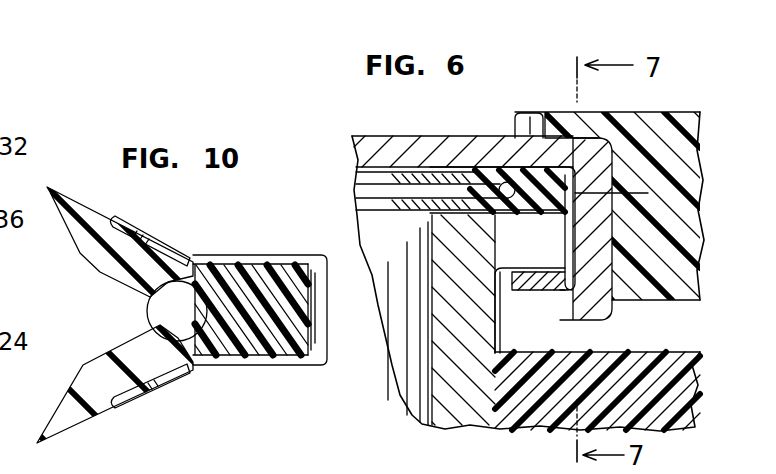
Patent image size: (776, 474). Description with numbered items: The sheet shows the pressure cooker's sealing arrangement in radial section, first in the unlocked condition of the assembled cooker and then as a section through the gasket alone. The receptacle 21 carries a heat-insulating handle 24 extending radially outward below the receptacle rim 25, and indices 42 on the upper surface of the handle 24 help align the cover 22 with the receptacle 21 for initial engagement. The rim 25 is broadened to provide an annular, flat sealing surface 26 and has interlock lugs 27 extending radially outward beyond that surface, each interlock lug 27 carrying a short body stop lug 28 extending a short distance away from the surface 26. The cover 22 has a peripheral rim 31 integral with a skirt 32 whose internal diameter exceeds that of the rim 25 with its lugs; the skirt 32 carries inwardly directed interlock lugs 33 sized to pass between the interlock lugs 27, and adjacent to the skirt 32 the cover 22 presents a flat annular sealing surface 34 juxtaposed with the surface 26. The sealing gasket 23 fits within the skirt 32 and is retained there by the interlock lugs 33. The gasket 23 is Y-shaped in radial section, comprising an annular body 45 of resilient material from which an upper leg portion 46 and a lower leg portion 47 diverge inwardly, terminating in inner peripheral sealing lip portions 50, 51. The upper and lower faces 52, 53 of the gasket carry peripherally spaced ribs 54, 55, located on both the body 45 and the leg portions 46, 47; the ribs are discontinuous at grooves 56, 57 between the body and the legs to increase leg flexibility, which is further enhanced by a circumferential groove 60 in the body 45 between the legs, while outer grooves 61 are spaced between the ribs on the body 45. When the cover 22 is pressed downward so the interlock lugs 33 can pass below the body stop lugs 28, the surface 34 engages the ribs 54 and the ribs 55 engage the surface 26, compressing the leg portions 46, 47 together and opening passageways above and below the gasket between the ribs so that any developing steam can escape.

In FIG. 6, the receptacle 21 is at (433, 423).
In FIG. 6, the cover 22 is at (380, 129).
In FIG. 10, the sealing gasket 23 is at (225, 245).
In FIG. 6, the sealing gasket 23 is at (358, 205).
In FIG. 6, the handles 24 is at (712, 355).
In FIG. 6, the receptacle rim 25 is at (473, 247).
In FIG. 6, the sealing surface 26 is at (395, 222).
In FIG. 6, the interlock lugs 27 is at (560, 292).
In FIG. 6, the body stop lugs 28 is at (530, 292).
In FIG. 6, the peripheral rim 31 is at (604, 136).
In FIG. 6, the skirt 32 is at (575, 187).
In FIG. 6, the interlock lugs 33 is at (578, 319).
In FIG. 6, the sealing surface 34 is at (521, 136).
In FIG. 6, the indices 42 is at (670, 346).
In FIG. 10, the annular body 45 is at (265, 345).
In FIG. 6, the annular body 45 is at (543, 185).
In FIG. 10, the upper leg portion 46 is at (100, 272).
In FIG. 6, the upper leg portion 46 is at (458, 180).
In FIG. 10, the lower leg portion 47 is at (100, 362).
In FIG. 6, the lower leg portion 47 is at (463, 212).
In FIG. 10, the lip portion 50 is at (48, 186).
In FIG. 6, the lip portion 50 is at (476, 182).
In FIG. 10, the lip portion 51 is at (37, 443).
In FIG. 6, the lip portion 51 is at (432, 222).
In FIG. 10, the upper face 52 is at (247, 264).
In FIG. 6, the upper face 52 is at (502, 228).
In FIG. 10, the lower face 53 is at (207, 366).
In FIG. 10, the ribs 54 is at (158, 230).
In FIG. 6, the ribs 54 is at (486, 178).
In FIG. 10, the ribs 55 is at (150, 392).
In FIG. 6, the ribs 55 is at (502, 216).
In FIG. 10, the groove 56 is at (168, 259).
In FIG. 6, the groove 56 is at (506, 170).
In FIG. 10, the groove 57 is at (180, 374).
In FIG. 6, the groove 57 is at (567, 229).
In FIG. 10, the circumferential groove 60 is at (205, 312).
In FIG. 6, the circumferential groove 60 is at (507, 190).
In FIG. 10, the outer grooves 61 is at (314, 318).
In FIG. 6, the outer grooves 61 is at (628, 197).